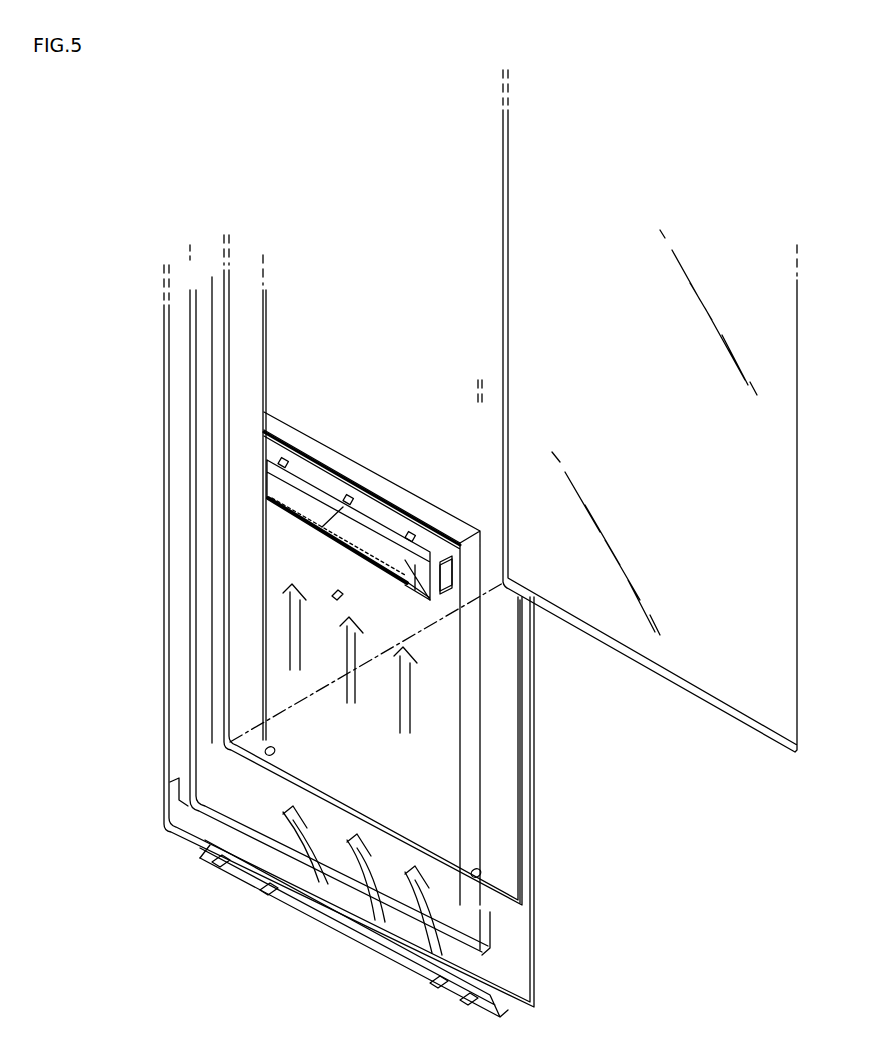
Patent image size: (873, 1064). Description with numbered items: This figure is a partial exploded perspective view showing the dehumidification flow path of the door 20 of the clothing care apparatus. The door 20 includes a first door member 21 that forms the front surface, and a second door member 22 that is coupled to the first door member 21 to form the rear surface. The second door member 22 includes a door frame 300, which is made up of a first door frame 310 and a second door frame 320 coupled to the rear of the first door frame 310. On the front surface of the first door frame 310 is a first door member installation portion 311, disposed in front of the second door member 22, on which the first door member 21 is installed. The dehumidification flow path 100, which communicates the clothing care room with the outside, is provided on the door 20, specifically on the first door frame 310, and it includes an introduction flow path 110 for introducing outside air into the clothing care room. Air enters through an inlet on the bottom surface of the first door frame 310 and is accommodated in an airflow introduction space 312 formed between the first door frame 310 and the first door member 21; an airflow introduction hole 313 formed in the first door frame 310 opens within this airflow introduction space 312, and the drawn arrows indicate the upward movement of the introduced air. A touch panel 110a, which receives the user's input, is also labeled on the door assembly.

The door 20 is at (373, 134).
The first door member 21 is at (517, 173).
The second door member 22 is at (198, 276).
The door frame 300 is at (102, 524).
The first door frame 310 is at (228, 527).
The first door member installation portion 311 is at (512, 853).
The airflow introduction space 312 is at (468, 697).
The airflow introduction hole 313 is at (352, 522).
The second door frame 320 is at (182, 602).
The dehumidification flow path 100 is at (365, 738).
The introduction flow path 110 is at (362, 880).
The touch panel 110a is at (285, 790).